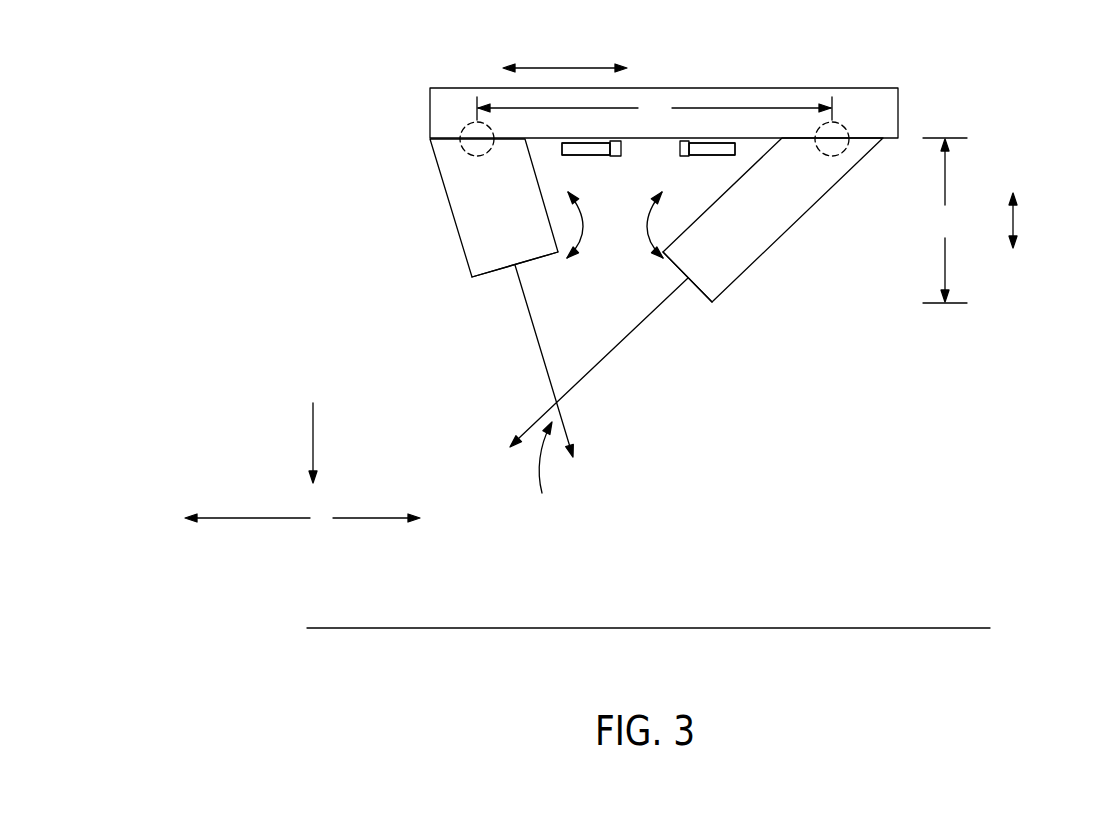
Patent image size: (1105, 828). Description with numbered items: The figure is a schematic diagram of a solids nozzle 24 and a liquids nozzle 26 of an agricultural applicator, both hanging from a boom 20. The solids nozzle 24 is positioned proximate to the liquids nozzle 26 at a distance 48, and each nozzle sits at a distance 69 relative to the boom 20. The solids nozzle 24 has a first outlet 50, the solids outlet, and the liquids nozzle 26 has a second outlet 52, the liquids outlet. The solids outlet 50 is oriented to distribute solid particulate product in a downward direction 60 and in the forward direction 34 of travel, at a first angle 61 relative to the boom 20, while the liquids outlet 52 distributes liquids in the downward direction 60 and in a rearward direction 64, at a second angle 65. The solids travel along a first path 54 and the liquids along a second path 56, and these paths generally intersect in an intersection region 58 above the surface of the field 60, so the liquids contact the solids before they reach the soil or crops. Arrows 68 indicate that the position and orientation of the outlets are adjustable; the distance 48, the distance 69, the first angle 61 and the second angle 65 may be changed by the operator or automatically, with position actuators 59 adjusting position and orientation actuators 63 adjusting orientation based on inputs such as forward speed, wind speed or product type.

The boom 20 is at (884, 88).
The solids nozzle 24 is at (798, 220).
The liquids nozzle 26 is at (450, 207).
The forward direction 34 is at (252, 518).
The distance 48 is at (654, 108).
The first outlet 50 is at (702, 292).
The second outlet 52 is at (480, 278).
The first path 54 is at (602, 360).
The second path 56 is at (532, 323).
The intersection region 58 is at (543, 472).
The position actuator 59 is at (678, 145).
The downward direction 60 is at (313, 440).
The first angle 61 is at (738, 158).
The orientation actuator 63 is at (468, 124).
The rearward direction 64 is at (372, 518).
The second angle 65 is at (531, 160).
The arrows 68 is at (565, 68).
The distance 69 is at (945, 220).